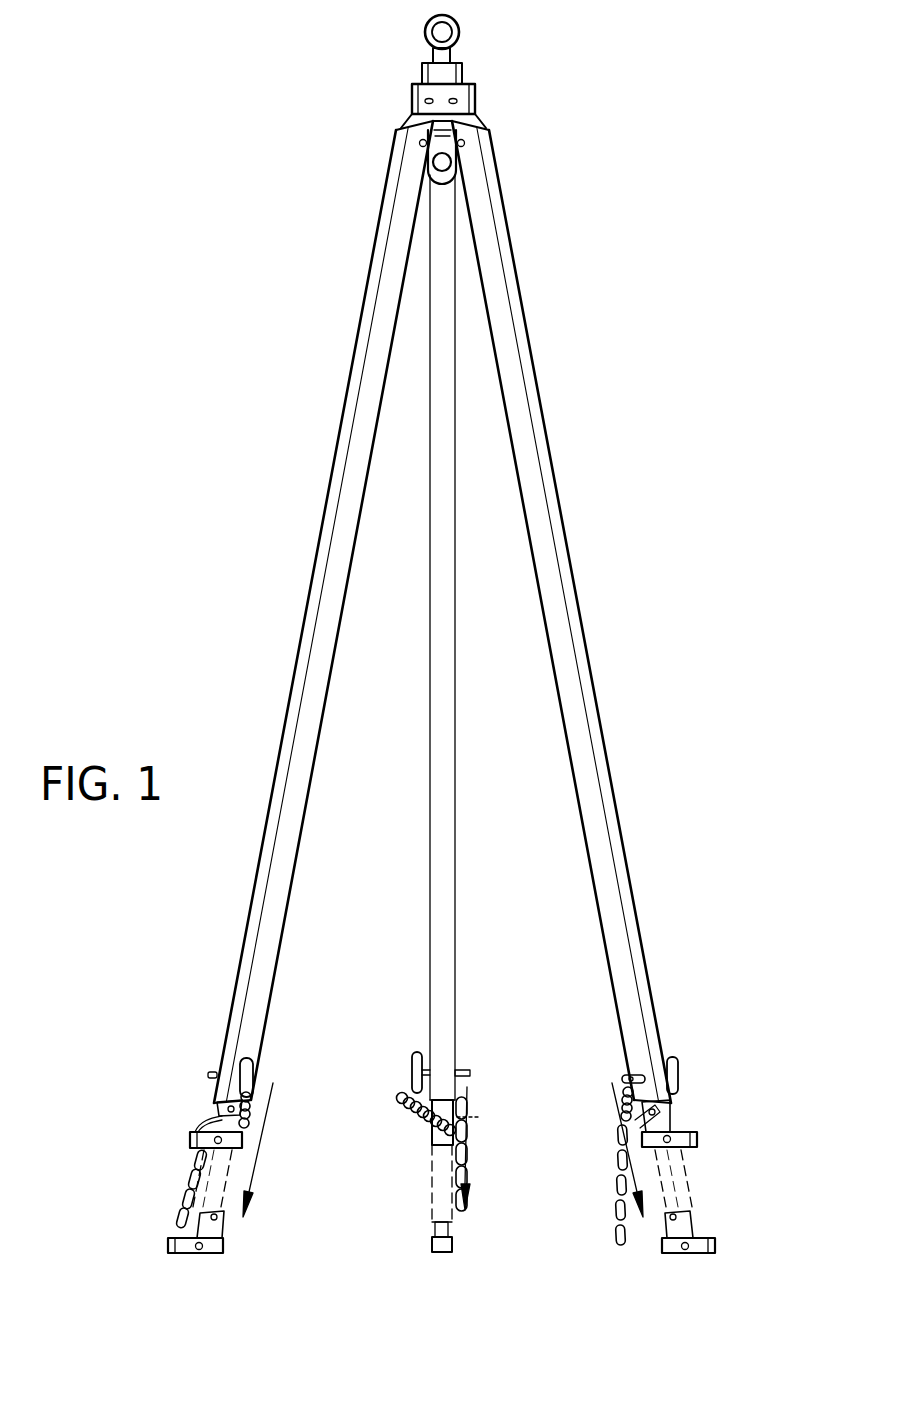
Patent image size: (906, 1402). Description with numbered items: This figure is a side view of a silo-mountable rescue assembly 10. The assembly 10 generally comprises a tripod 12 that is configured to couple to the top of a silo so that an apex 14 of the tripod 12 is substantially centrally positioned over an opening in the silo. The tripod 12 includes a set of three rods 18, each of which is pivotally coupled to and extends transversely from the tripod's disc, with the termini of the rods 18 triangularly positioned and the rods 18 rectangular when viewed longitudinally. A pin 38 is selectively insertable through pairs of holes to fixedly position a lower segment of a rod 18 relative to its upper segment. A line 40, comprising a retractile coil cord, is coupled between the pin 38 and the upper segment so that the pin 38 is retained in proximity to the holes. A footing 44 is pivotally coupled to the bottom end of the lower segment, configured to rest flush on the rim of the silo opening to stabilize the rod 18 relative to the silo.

The silo-mountable rescue assembly 10 is at (473, 634).
The tripod 12 is at (517, 295).
The apex 14 is at (457, 97).
The rods 18 is at (308, 745).
The pin 38 is at (412, 1058).
The line 40 is at (400, 1118).
The footing 44 is at (697, 1128).